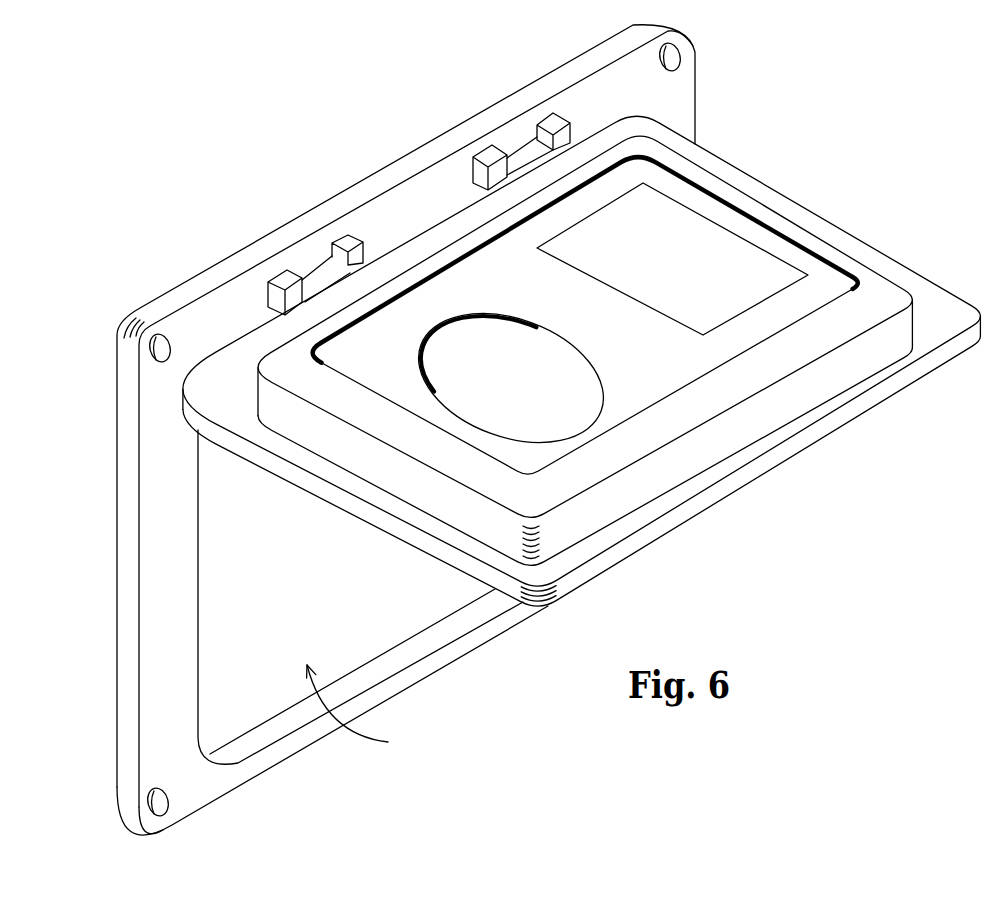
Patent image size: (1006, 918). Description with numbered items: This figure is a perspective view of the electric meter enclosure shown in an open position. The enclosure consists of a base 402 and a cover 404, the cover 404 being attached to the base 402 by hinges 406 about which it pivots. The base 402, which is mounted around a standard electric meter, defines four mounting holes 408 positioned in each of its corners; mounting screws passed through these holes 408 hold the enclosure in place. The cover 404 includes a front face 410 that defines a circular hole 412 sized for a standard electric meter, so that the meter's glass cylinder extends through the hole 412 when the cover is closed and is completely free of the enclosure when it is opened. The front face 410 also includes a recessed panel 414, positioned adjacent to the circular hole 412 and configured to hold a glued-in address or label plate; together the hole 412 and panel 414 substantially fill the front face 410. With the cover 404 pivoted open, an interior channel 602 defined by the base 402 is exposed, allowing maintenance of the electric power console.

The base 402 is at (674, 88).
The cover 404 is at (700, 143).
The hinges 406 is at (523, 147).
The mounting holes 408 is at (677, 46).
The front face 410 is at (803, 263).
The circular hole 412 is at (462, 393).
The recessed panel 414 is at (712, 253).
The interior channel 602 is at (364, 709).